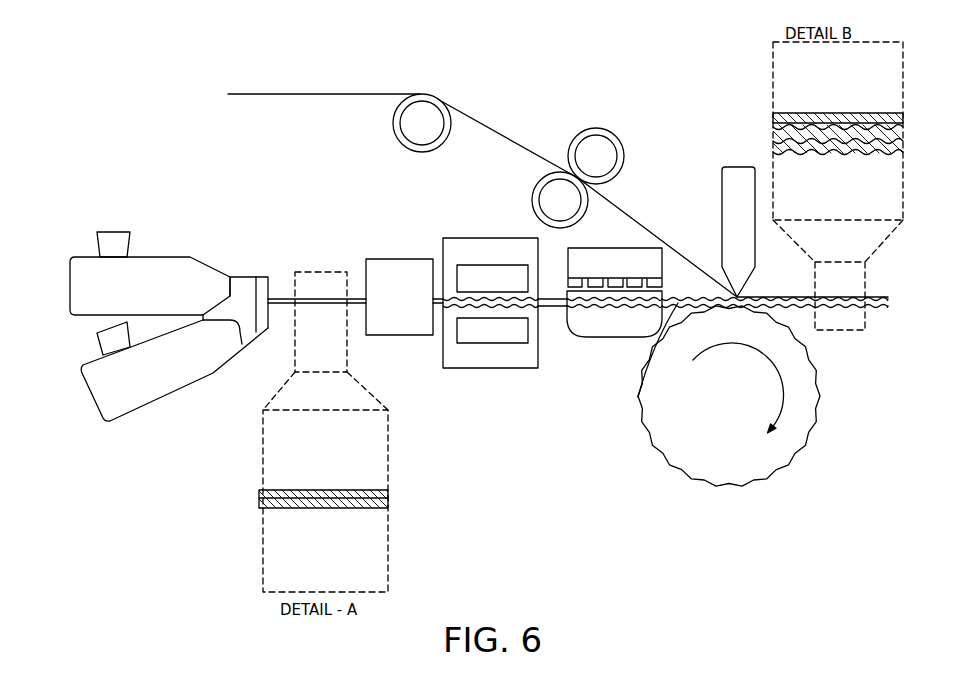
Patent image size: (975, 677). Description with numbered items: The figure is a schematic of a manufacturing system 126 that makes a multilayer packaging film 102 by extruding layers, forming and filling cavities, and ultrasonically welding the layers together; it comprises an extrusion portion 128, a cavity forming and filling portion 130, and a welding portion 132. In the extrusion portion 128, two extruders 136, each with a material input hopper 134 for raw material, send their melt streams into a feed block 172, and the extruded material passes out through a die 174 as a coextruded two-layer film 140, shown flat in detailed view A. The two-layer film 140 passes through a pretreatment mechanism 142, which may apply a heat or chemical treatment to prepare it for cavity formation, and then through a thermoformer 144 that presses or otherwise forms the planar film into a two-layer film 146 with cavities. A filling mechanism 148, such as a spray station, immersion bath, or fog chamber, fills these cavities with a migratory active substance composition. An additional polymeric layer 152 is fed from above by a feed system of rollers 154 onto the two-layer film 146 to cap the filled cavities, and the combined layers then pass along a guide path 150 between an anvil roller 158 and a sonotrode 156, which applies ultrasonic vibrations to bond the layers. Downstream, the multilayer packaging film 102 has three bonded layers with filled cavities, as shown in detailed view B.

The multilayer packaging film 102 is at (895, 125).
The manufacturing system 126 is at (540, 56).
The extrusion portion 128 is at (113, 196).
The cavity forming and filling portion 130 is at (478, 430).
The welding portion 132 is at (832, 349).
The material input hopper 134 is at (110, 243).
The extruder 136 is at (92, 291).
The two-layer film 140 is at (368, 508).
The pretreatment mechanism 142 is at (412, 330).
The thermoformer 144 is at (482, 360).
The two-layer film with cavities 146 is at (552, 305).
The filling mechanism 148 is at (590, 325).
The web guide 150 is at (638, 397).
The additional polymeric layer 152 is at (494, 128).
The roller 154 is at (425, 117).
The sonotrode 156 is at (728, 207).
The anvil roller 158 is at (782, 450).
The feed block 172 is at (243, 287).
The die 174 is at (262, 300).